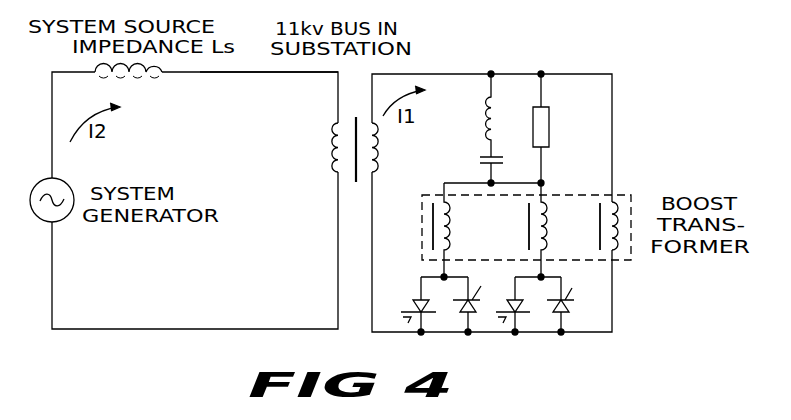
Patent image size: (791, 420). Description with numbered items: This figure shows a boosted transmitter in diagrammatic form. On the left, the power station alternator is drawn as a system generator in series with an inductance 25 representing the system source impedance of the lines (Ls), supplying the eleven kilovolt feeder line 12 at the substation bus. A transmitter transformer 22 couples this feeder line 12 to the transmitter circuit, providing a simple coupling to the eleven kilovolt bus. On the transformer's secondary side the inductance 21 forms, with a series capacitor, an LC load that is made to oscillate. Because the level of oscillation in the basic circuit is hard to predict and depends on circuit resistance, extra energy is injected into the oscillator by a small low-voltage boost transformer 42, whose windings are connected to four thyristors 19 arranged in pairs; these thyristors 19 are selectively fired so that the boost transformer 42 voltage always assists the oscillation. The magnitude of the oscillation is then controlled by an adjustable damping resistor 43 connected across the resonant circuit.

The system source impedance 25 is at (160, 82).
The feeder line 12 is at (288, 75).
The transmitter transformer 22 is at (331, 152).
The inductance 21 is at (483, 128).
The adjustable damping resistor 43 is at (549, 140).
The boost transformer 42 is at (627, 192).
The thyristors 19 is at (416, 302).